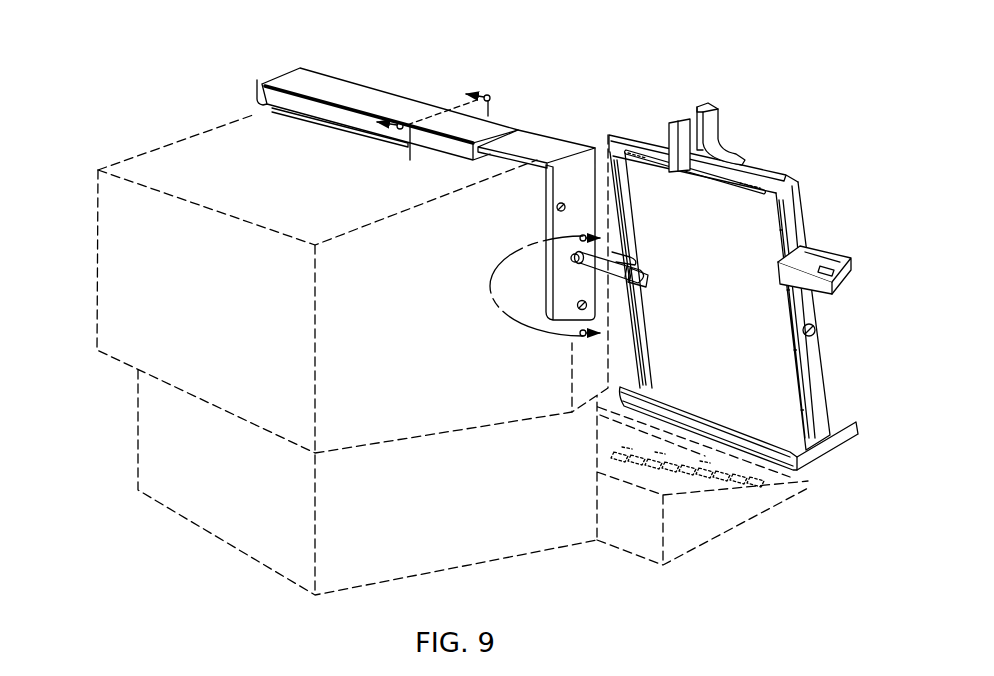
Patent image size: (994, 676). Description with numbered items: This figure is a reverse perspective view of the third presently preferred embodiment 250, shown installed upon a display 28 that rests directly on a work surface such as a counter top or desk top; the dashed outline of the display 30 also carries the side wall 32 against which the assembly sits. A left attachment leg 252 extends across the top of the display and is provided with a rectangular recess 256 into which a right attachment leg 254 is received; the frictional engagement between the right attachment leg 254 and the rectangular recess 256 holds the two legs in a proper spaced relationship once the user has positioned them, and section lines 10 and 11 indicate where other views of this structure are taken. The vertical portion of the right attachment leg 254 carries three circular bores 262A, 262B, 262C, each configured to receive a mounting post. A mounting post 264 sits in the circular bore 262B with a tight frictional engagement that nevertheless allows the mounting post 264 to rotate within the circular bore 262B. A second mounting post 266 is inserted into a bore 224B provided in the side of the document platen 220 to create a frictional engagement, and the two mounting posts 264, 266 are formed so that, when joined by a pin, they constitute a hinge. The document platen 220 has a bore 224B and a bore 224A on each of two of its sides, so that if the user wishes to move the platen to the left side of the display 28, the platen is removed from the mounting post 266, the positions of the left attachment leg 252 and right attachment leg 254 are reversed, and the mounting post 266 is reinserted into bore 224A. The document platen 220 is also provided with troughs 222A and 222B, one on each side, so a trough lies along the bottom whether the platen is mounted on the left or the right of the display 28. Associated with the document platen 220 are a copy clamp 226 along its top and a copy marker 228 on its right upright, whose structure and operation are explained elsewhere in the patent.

The display 28 is at (231, 160).
The display 30 is at (364, 206).
The side wall of housing 32 is at (605, 140).
The section line 10- 10 is at (453, 126).
The section line 11- 11 is at (545, 284).
The third presently preferred embodiment 250 is at (571, 241).
The left attachment leg 252 is at (313, 78).
The right attachment leg 254 is at (550, 150).
The rectangular recess 256 is at (519, 129).
The circular bore 262A is at (557, 208).
The circular bore 262B is at (571, 258).
The circular bore 262C is at (578, 309).
The mounting post 264 is at (575, 283).
The mounting post 266 is at (623, 260).
The document platen 220 is at (723, 310).
The trough 222A is at (838, 421).
The trough 222B is at (784, 445).
The bore 224A is at (817, 329).
The bore 224B is at (641, 286).
The copy clamp 226 is at (719, 101).
The copy marker 228 is at (832, 241).